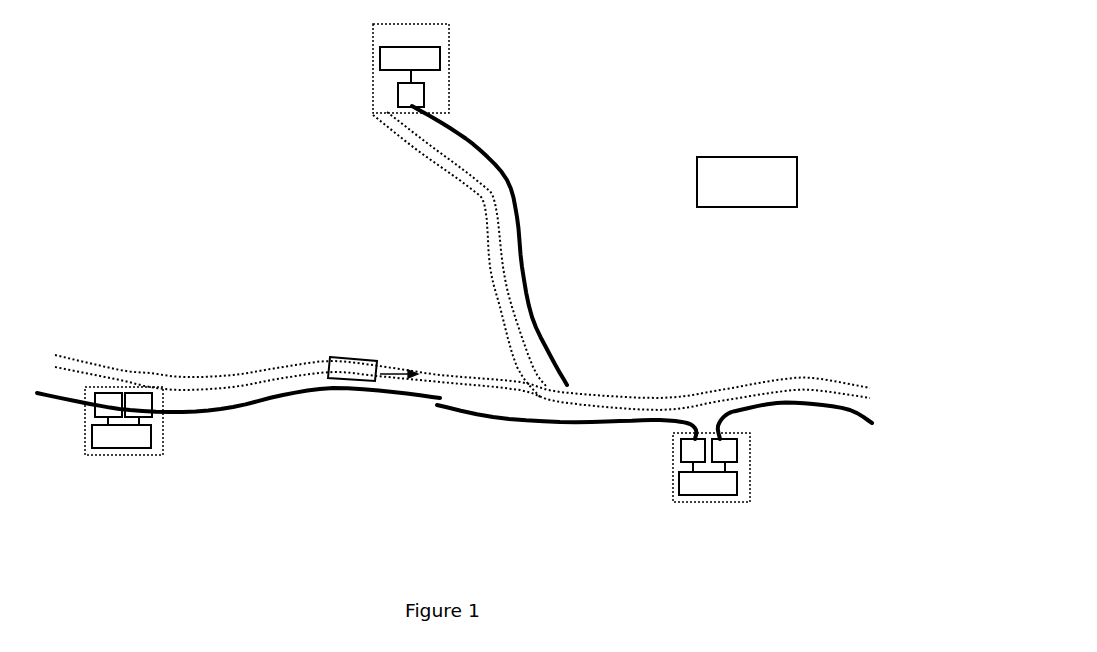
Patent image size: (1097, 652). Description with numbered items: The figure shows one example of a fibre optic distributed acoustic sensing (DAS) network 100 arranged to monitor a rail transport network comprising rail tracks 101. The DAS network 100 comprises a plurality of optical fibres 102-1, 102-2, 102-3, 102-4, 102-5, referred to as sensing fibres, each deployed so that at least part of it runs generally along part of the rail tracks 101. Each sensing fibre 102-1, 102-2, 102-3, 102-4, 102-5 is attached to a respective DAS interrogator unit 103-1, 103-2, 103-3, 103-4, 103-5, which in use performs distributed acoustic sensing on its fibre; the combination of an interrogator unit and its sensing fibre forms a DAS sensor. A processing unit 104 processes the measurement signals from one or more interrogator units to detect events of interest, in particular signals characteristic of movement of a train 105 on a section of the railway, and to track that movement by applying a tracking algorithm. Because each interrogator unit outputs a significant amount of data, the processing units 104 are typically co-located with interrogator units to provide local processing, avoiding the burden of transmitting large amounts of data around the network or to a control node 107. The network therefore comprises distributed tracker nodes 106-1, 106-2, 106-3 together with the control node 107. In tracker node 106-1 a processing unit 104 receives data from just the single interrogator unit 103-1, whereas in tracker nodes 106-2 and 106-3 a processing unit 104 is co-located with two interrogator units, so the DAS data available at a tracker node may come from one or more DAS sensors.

The fibre optic distributed acoustic sensing (DAS) network 100 is at (131, 103).
The rail tracks 101 is at (462, 261).
The optical fibre 102-1 is at (512, 245).
The optical fibre 102-2 is at (101, 445).
The optical fibre 102-3 is at (311, 421).
The optical fibre 102-4 is at (566, 446).
The optical fibre 102-5 is at (795, 366).
The DAS interrogator unit 103-1 is at (339, 278).
The DAS interrogator unit 103-2 is at (130, 354).
The DAS interrogator unit 103-3 is at (138, 409).
The DAS interrogator unit 103-4 is at (636, 463).
The DAS interrogator unit 103-5 is at (783, 474).
The processing unit 104 is at (430, 296).
The train 105 is at (366, 320).
The tracker node 106-1 is at (356, 68).
The tracker node 106-2 is at (163, 467).
The tracker node 106-3 is at (695, 499).
The control node 107 is at (747, 182).